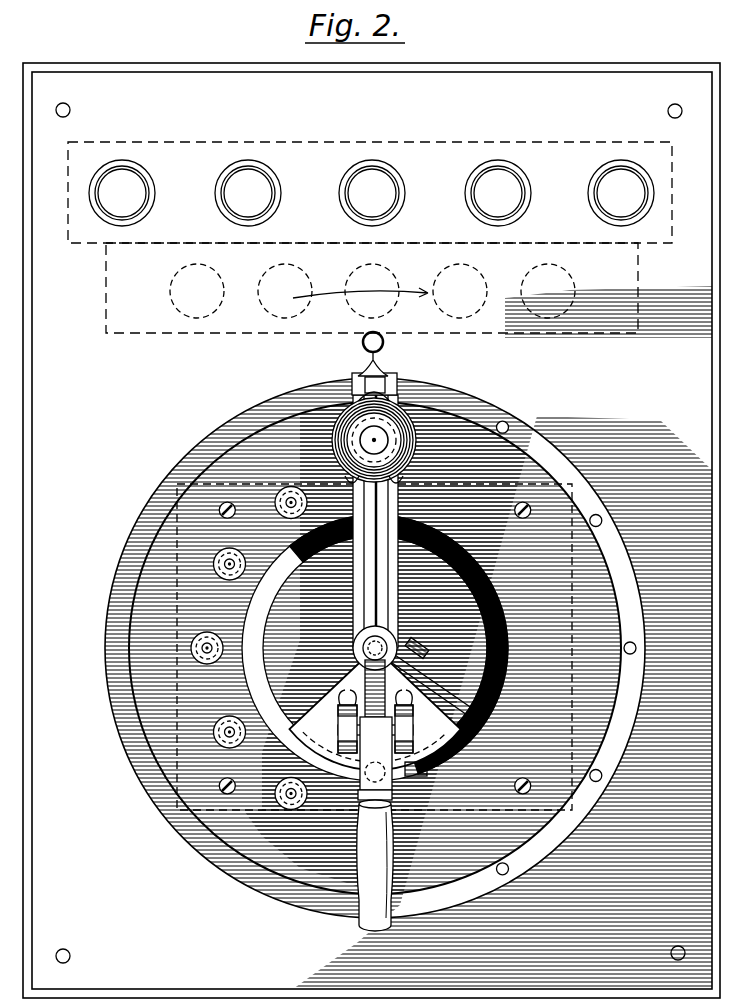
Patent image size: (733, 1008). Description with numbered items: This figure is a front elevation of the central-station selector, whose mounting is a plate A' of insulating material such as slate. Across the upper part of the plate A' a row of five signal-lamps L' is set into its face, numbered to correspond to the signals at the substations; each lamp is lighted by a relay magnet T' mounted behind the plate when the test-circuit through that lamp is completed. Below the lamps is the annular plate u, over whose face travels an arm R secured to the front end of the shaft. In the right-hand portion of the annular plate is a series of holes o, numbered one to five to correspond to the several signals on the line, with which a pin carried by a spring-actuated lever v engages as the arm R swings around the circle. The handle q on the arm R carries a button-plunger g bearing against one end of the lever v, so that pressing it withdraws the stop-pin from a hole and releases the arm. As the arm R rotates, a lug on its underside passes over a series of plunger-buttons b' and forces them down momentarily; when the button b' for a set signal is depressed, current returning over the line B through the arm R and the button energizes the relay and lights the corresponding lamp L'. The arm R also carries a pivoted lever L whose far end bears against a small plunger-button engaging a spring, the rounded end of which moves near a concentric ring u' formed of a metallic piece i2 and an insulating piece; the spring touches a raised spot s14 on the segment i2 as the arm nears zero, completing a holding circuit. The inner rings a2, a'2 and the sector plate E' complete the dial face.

The plate A' is at (371, 530).
The signal-lamps L' is at (370, 192).
The magnet T' is at (372, 288).
The outer bezel ring u is at (375, 648).
The holes o is at (502, 421).
The dial face plate u' is at (374, 647).
The inner ring a2 is at (282, 583).
The black indicating ring a'2 is at (415, 644).
The sector plate E' is at (383, 709).
The raised spot s14 is at (416, 770).
The arm R is at (400, 596).
The button-plunger g is at (338, 437).
The handle q is at (360, 440).
The spring-actuated lever v is at (398, 367).
The line B is at (232, 556).
The metallic piece i2 is at (250, 624).
The plunger-buttons b' is at (363, 737).
The pivoted lever L is at (361, 778).